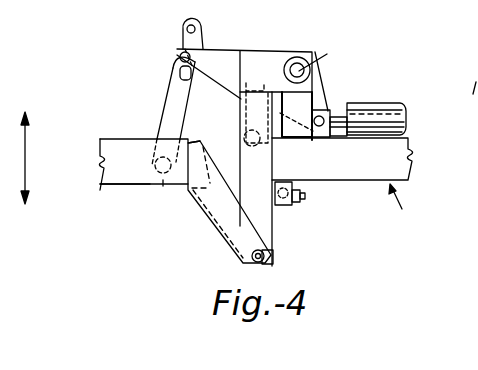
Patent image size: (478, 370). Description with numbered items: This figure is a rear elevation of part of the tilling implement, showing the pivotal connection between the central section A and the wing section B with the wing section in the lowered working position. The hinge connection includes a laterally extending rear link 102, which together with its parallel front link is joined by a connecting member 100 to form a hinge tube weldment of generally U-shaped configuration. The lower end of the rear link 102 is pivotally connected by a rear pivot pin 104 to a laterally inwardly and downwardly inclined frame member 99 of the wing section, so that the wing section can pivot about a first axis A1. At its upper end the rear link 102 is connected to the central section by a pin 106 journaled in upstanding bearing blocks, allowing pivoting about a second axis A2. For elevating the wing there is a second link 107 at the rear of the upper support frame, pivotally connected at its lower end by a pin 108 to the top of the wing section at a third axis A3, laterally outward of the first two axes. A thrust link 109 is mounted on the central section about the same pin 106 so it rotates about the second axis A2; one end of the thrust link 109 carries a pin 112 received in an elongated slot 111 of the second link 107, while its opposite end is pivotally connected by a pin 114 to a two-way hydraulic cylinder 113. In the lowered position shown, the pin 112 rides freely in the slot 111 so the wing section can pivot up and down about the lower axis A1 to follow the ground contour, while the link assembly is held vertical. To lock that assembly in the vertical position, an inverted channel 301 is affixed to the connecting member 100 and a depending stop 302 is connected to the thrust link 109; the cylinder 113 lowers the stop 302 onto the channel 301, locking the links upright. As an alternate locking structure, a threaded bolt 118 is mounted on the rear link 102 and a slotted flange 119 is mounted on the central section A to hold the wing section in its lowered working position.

The frame member 99 is at (233, 240).
The connecting member 100 is at (273, 160).
The rear link 102 is at (272, 224).
The rear pivot pin 104 is at (265, 258).
The pin 106 is at (298, 62).
The second link 107 is at (164, 111).
The pin 108 is at (126, 199).
The thrust link 109 is at (233, 52).
The elongated slot 111 is at (181, 74).
The pin 112 is at (181, 48).
The two-way hydraulic cylinder 113 is at (400, 111).
The pin 114 is at (328, 107).
The threaded bolt 118 is at (305, 196).
The slotted flange 119 is at (293, 206).
The inverted channel 301 is at (250, 137).
The depending stop 302 is at (240, 107).
The central section A is at (403, 206).
The first axis A1 is at (250, 265).
The second axis A2 is at (328, 54).
The third axis A3 is at (156, 159).
The left wing section B is at (99, 185).